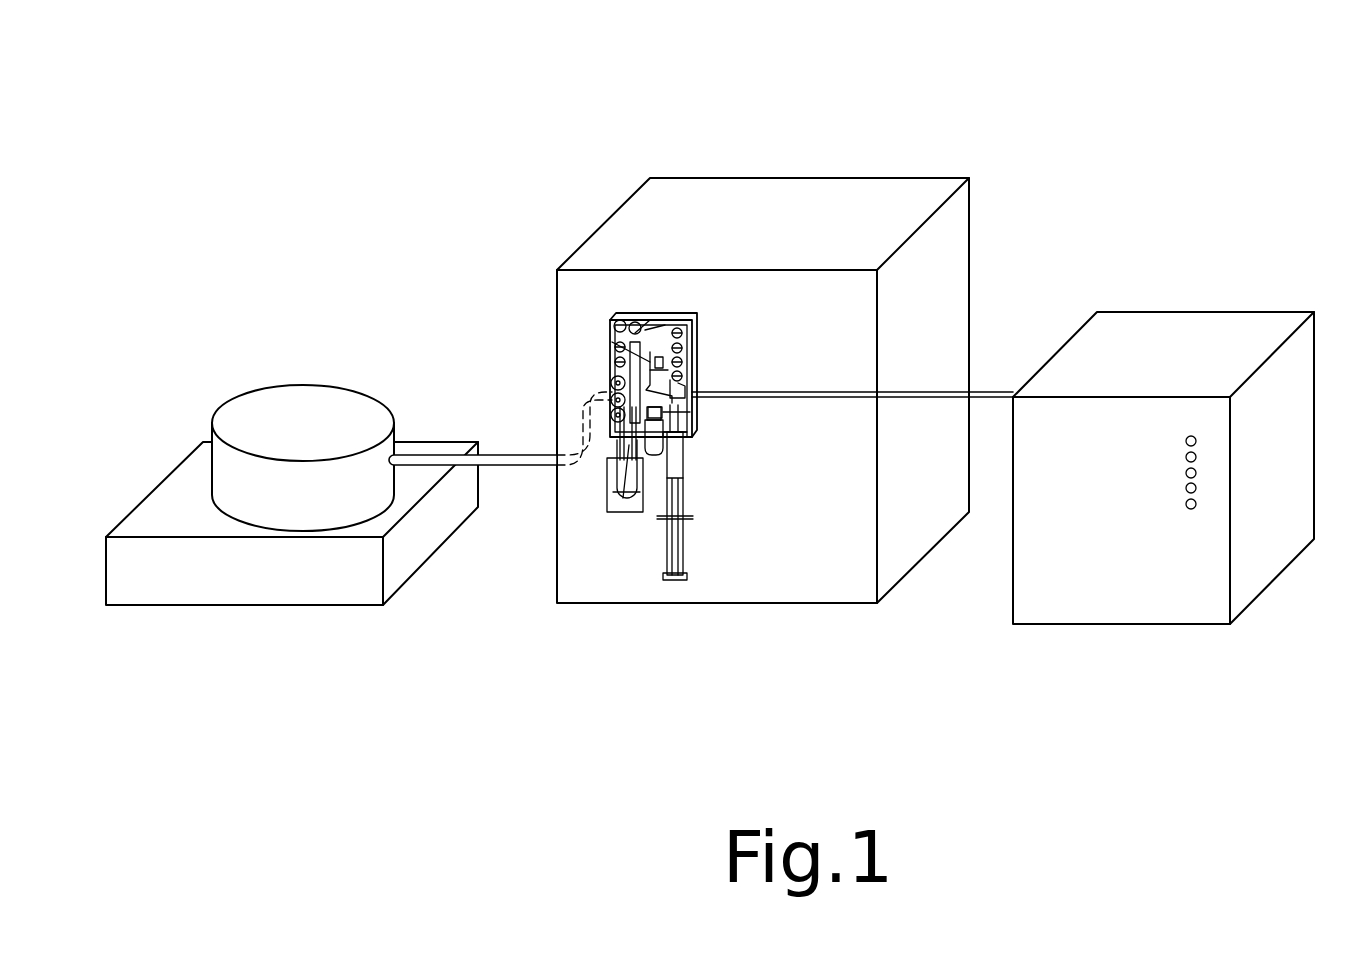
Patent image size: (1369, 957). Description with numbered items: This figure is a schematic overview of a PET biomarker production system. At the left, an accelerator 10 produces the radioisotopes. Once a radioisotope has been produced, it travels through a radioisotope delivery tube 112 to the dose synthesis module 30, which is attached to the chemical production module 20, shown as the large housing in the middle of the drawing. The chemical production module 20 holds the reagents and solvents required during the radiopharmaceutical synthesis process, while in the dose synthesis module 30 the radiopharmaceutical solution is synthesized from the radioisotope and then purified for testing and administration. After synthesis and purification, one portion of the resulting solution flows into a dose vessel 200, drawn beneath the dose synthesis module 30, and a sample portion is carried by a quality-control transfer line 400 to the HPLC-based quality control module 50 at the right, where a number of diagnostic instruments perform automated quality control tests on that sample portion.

The accelerator 10 is at (256, 648).
The radioisotope delivery tube 112 is at (503, 455).
The chemical production module 20 is at (853, 148).
The dose synthesis module 30 is at (585, 320).
The dose vessel 200 is at (683, 462).
The quality-control transfer line 400 is at (913, 395).
The quality control module 50 is at (1308, 262).